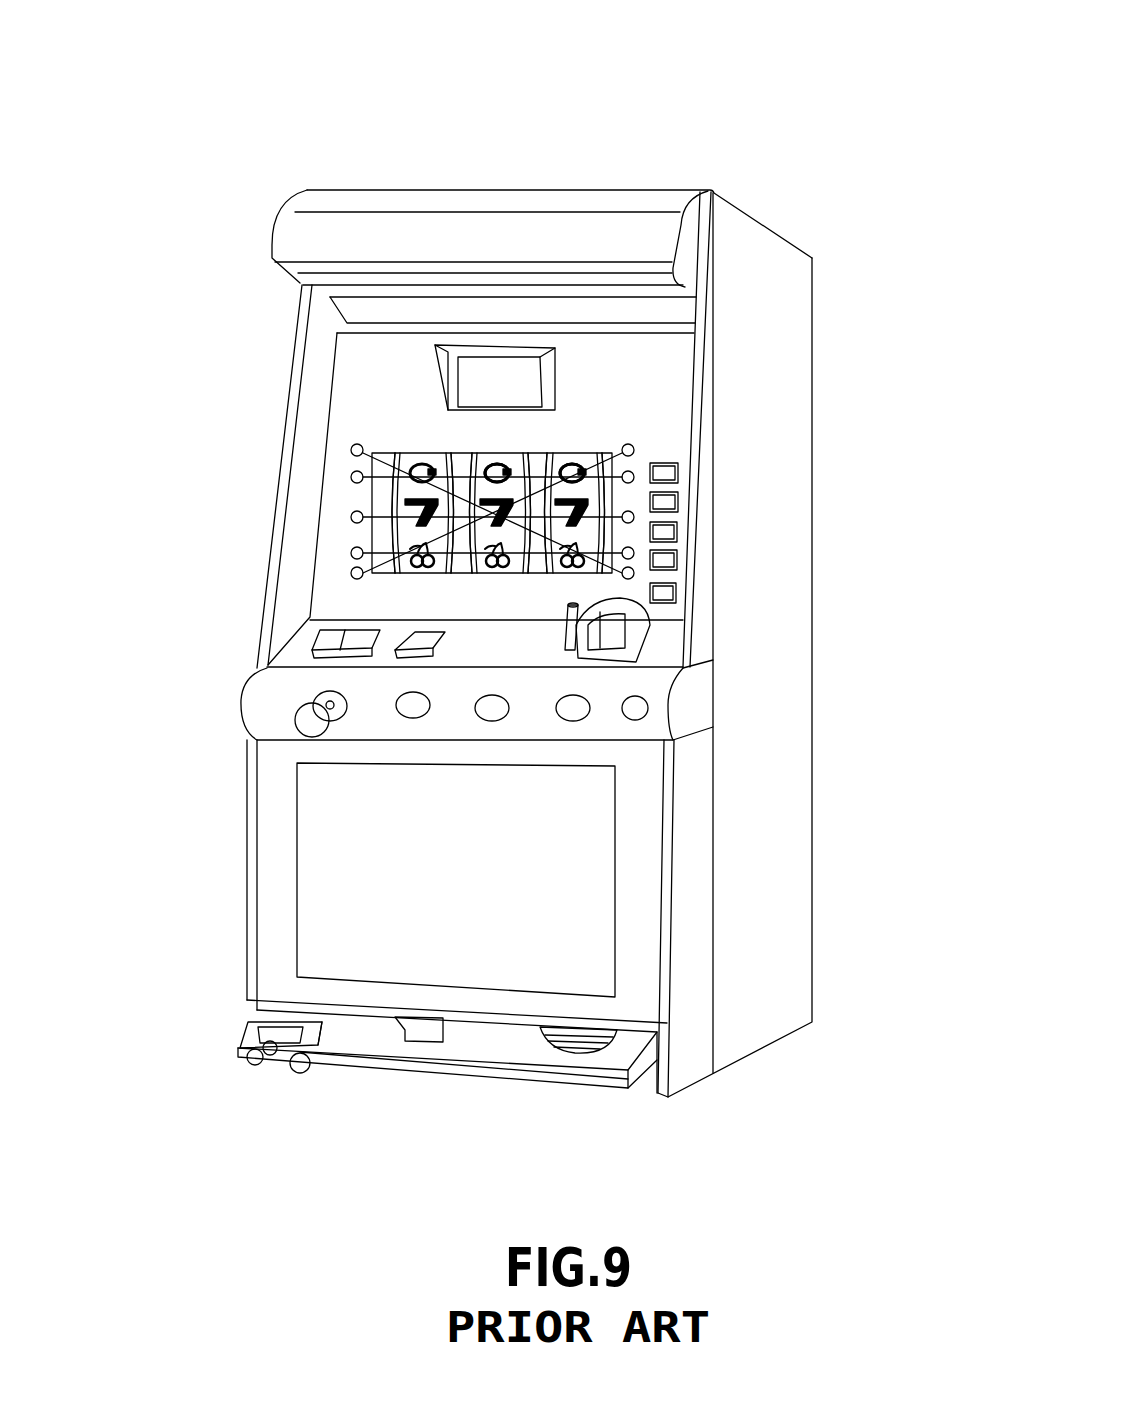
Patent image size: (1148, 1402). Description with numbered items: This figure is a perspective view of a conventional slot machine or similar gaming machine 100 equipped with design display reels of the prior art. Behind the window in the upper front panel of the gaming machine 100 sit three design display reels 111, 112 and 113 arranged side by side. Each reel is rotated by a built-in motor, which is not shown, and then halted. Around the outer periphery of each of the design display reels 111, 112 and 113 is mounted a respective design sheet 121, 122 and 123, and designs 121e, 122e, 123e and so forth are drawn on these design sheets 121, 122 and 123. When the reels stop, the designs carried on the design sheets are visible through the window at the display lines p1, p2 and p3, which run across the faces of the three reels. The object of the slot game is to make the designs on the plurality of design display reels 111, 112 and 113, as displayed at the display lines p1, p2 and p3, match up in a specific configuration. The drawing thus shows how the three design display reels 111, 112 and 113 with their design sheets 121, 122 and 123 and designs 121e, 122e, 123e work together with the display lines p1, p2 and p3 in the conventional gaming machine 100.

The gaming machine 100 is at (773, 210).
The design display reel 111 is at (417, 460).
The design display reel 112 is at (500, 460).
The design display reel 113 is at (580, 462).
The design sheet 121 is at (412, 573).
The design sheet 122 is at (483, 573).
The design sheet 123 is at (570, 573).
The design 121e is at (405, 495).
The design 122e is at (473, 473).
The design 123e is at (592, 495).
The display line p1 is at (395, 512).
The display line p2 is at (400, 490).
The display line p3 is at (388, 573).